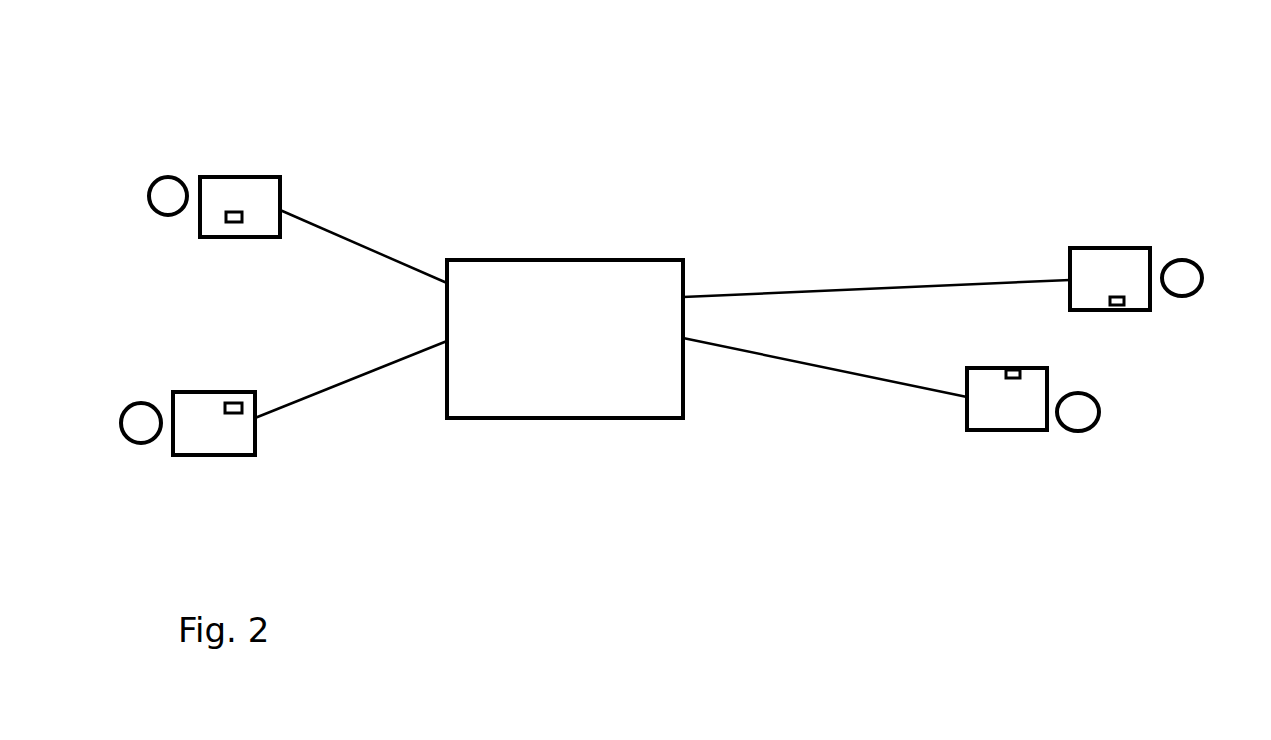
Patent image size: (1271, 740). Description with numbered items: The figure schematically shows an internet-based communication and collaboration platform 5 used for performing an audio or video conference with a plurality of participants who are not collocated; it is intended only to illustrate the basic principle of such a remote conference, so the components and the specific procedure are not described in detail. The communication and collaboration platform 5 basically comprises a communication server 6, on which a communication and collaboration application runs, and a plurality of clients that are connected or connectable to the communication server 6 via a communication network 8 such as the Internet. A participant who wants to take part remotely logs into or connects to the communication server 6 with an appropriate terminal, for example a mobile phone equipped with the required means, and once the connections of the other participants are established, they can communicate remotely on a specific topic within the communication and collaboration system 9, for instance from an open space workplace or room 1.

The open space workplace or room 1 is at (657, 137).
The communication and collaboration platform 5 is at (351, 256).
The communication server 6 is at (551, 257).
The communication network 8 is at (773, 237).
The communication and collaboration system 9 is at (435, 200).